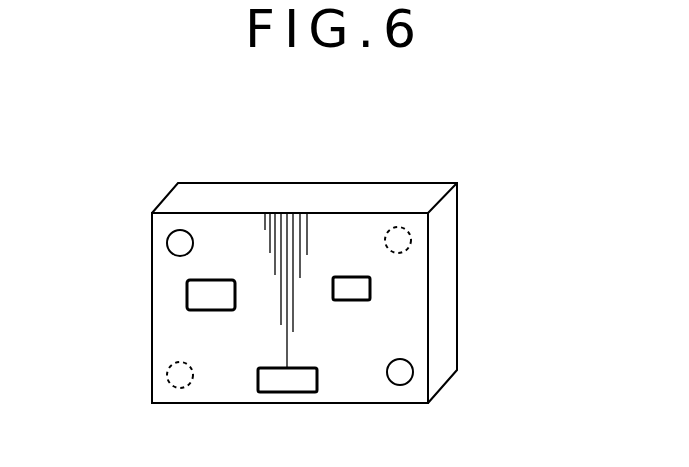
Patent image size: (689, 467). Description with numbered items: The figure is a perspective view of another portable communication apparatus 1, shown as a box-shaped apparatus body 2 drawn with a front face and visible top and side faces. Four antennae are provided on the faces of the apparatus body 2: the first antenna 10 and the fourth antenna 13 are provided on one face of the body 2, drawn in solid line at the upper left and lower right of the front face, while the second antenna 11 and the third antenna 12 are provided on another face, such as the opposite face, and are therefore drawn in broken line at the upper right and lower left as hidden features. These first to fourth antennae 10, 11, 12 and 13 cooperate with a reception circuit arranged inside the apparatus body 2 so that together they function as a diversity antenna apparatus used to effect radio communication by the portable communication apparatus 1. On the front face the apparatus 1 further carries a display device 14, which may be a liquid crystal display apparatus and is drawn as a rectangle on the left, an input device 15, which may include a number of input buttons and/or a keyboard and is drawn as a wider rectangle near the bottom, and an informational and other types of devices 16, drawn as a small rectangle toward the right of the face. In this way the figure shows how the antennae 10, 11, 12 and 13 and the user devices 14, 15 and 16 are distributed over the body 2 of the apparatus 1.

The portable communication apparatus 1 is at (311, 162).
The apparatus body 2 is at (443, 300).
The first antenna 10 is at (166, 243).
The second antenna 11 is at (412, 240).
The third antenna 12 is at (166, 375).
The fourth antenna 13 is at (413, 372).
The display device 14 is at (187, 296).
The input device 15 is at (282, 392).
The informational and other types of devices 16 is at (360, 277).